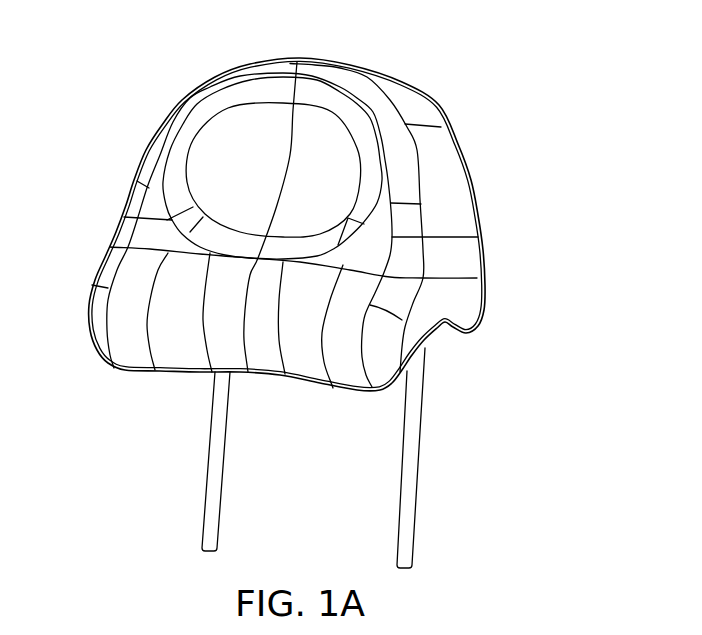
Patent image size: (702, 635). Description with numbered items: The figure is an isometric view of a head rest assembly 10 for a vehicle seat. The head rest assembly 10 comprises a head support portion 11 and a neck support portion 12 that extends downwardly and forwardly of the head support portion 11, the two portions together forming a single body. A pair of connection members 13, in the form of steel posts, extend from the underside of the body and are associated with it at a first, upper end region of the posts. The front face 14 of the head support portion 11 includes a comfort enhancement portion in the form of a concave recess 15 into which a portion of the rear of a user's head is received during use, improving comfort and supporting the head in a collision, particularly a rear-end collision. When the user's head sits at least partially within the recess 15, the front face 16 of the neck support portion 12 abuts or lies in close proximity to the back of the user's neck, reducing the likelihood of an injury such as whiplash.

The head rest assembly 10 is at (509, 214).
The head support portion 11 is at (157, 140).
The neck support portion 12 is at (102, 360).
The connection members 13 is at (407, 480).
The front face of the head support portion 14 is at (377, 220).
The concave recess 15 is at (278, 147).
The front face of the neck support portion 16 is at (290, 368).